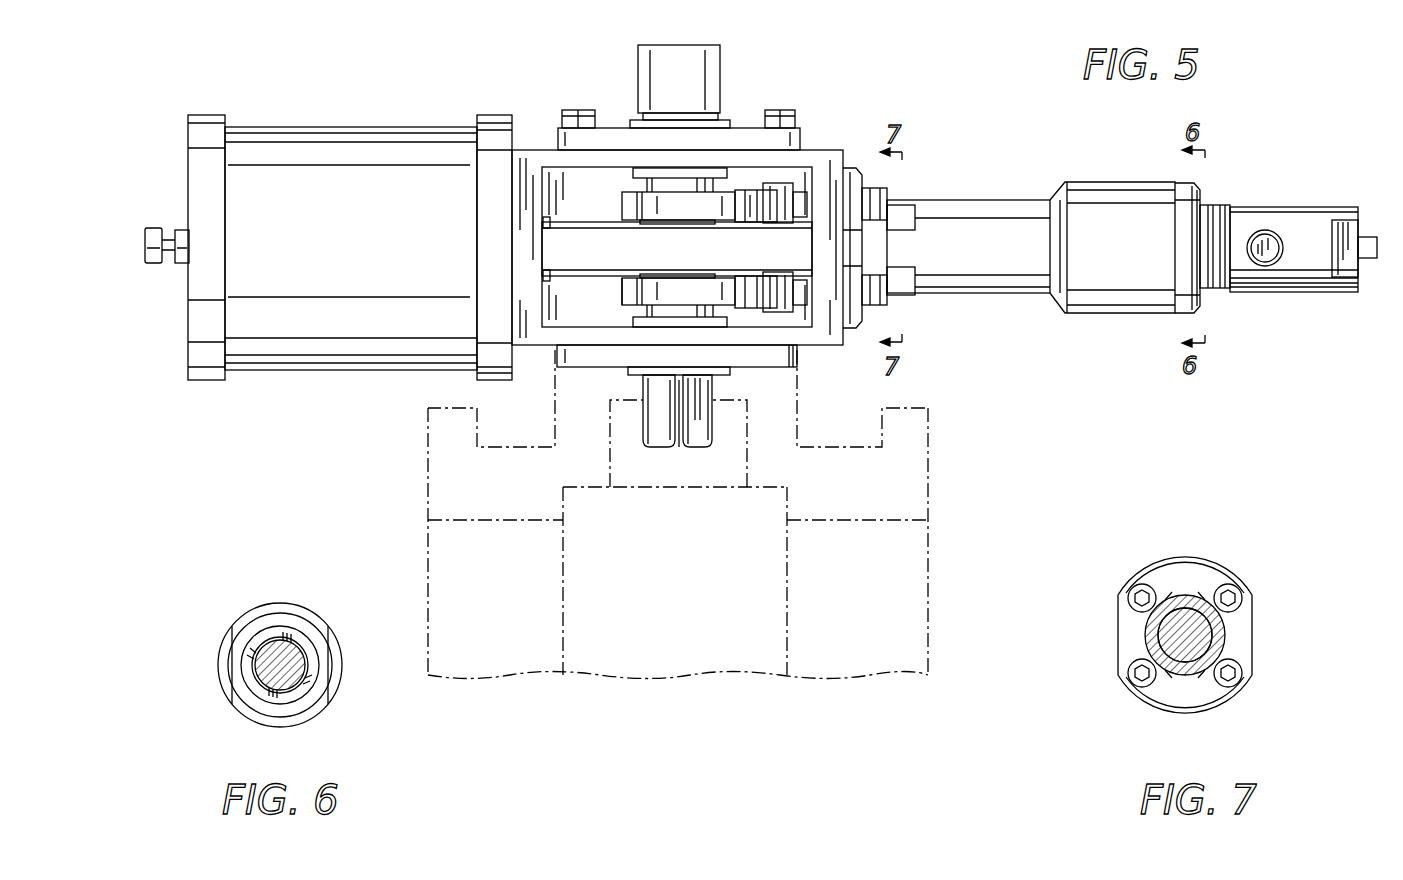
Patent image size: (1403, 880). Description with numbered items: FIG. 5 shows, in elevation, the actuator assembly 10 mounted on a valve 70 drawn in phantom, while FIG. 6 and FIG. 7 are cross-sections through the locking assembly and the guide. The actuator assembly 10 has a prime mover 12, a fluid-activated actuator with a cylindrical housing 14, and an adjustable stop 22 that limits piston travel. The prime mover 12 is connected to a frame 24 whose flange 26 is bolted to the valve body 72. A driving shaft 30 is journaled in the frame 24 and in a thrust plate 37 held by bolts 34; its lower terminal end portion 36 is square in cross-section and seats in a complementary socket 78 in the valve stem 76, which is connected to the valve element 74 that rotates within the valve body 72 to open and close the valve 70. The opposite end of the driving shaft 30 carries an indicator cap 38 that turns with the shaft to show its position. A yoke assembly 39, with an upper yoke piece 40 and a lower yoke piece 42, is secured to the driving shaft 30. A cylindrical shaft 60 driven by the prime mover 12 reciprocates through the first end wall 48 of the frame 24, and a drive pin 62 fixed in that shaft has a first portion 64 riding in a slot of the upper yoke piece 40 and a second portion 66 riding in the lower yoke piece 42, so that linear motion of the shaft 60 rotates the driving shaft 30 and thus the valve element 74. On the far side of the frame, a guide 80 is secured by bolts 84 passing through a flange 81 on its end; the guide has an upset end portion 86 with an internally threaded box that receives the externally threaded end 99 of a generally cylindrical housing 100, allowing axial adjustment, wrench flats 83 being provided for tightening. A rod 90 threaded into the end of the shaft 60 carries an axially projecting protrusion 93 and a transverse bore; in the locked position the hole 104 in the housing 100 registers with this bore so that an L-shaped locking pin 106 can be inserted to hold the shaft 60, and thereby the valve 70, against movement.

In FIG. 5, the actuator assembly 10 is at (986, 106).
In FIG. 5, the prime mover 12 is at (310, 125).
In FIG. 5, the cylindrical housing 14 is at (370, 132).
In FIG. 5, the adjustable stop 22 is at (157, 265).
In FIG. 5, the frame 24 is at (828, 135).
In FIG. 5, the flange 26 is at (798, 358).
In FIG. 5, the driving shaft 30 is at (660, 188).
In FIG. 5, the bolts 34 is at (785, 116).
In FIG. 5, the terminal end portion 36 is at (652, 428).
In FIG. 5, the upper plate 37 is at (738, 146).
In FIG. 5, the indicator cap 38 is at (722, 61).
In FIG. 5, the yoke assembly 39 is at (625, 302).
In FIG. 5, the upper yoke piece 40 is at (752, 206).
In FIG. 5, the lower yoke piece 42 is at (760, 296).
In FIG. 5, the first end wall 48 is at (562, 250).
In FIG. 7, the cylindrical shaft 60 is at (1210, 630).
In FIG. 5, the drive pin 62 is at (777, 228).
In FIG. 5, the first portion 64 is at (786, 186).
In FIG. 5, the second portion 66 is at (790, 294).
In FIG. 5, the valve 70 is at (970, 468).
In FIG. 5, the valve body 72 is at (928, 497).
In FIG. 5, the valve element 74 is at (787, 633).
In FIG. 5, the valve stem 76 is at (748, 469).
In FIG. 5, the socket 78 is at (680, 450).
In FIG. 5, the guide 80 is at (1018, 202).
In FIG. 7, the guide 80 is at (1192, 590).
In FIG. 5, the flange 81 is at (864, 184).
In FIG. 7, the flange 81 is at (1208, 697).
In FIG. 5, the wrench flats 83 is at (1182, 272).
In FIG. 5, the bolts 84 is at (882, 198).
In FIG. 7, the bolts 84 is at (1142, 584).
In FIG. 5, the upset end portion 86 is at (1107, 192).
In FIG. 6, the upset end portion 86 is at (256, 605).
In FIG. 6, the rod 90 is at (296, 672).
In FIG. 5, the axially projecting protrusion 93 is at (1375, 237).
In FIG. 5, the externally threaded end 99 is at (1218, 292).
In FIG. 5, the cylindrical housing 100 is at (1245, 203).
In FIG. 6, the cylindrical housing 100 is at (306, 628).
In FIG. 5, the hole 104 is at (1280, 258).
In FIG. 5, the locking pin 106 is at (1272, 236).